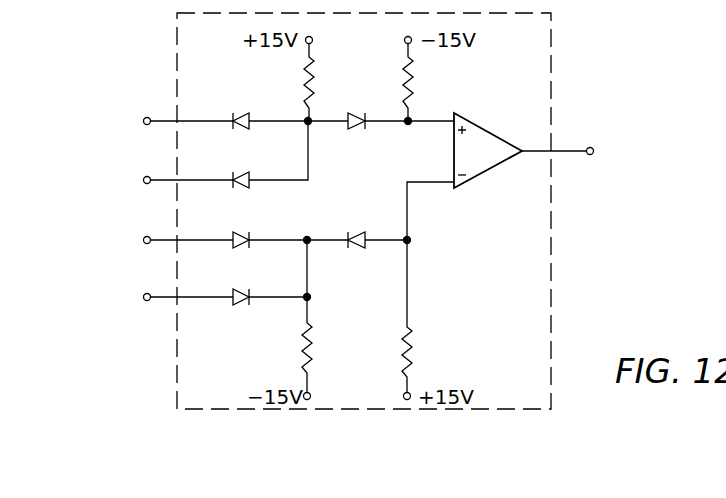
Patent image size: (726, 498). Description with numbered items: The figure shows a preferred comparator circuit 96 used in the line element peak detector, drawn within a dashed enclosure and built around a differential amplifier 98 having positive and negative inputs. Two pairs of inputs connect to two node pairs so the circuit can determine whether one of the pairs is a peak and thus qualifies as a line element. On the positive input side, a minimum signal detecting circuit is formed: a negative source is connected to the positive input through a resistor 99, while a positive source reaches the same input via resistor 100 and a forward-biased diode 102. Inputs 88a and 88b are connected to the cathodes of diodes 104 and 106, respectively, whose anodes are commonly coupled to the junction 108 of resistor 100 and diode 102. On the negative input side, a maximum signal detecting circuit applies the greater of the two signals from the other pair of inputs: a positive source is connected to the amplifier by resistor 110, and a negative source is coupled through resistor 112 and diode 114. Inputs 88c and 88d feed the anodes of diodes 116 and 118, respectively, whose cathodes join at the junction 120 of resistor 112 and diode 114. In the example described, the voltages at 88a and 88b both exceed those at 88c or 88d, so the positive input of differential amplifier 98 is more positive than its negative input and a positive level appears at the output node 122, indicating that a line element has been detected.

The comparator circuit 96 is at (551, 296).
The input 88a is at (156, 119).
The input 88b is at (157, 167).
The input 88c is at (158, 234).
The input 88d is at (161, 289).
The diode 104 is at (241, 130).
The diode 106 is at (241, 189).
The diode 116 is at (241, 249).
The diode 118 is at (241, 306).
The junction 108 is at (311, 124).
The resistor 100 is at (313, 82).
The resistor 99 is at (412, 82).
The forward-biased diode 102 is at (357, 130).
The diode 114 is at (356, 249).
The junction 120 is at (310, 299).
The resistor 112 is at (303, 350).
The resistor 110 is at (411, 336).
The differential amplifier 98 is at (503, 160).
The output node 122 is at (594, 151).